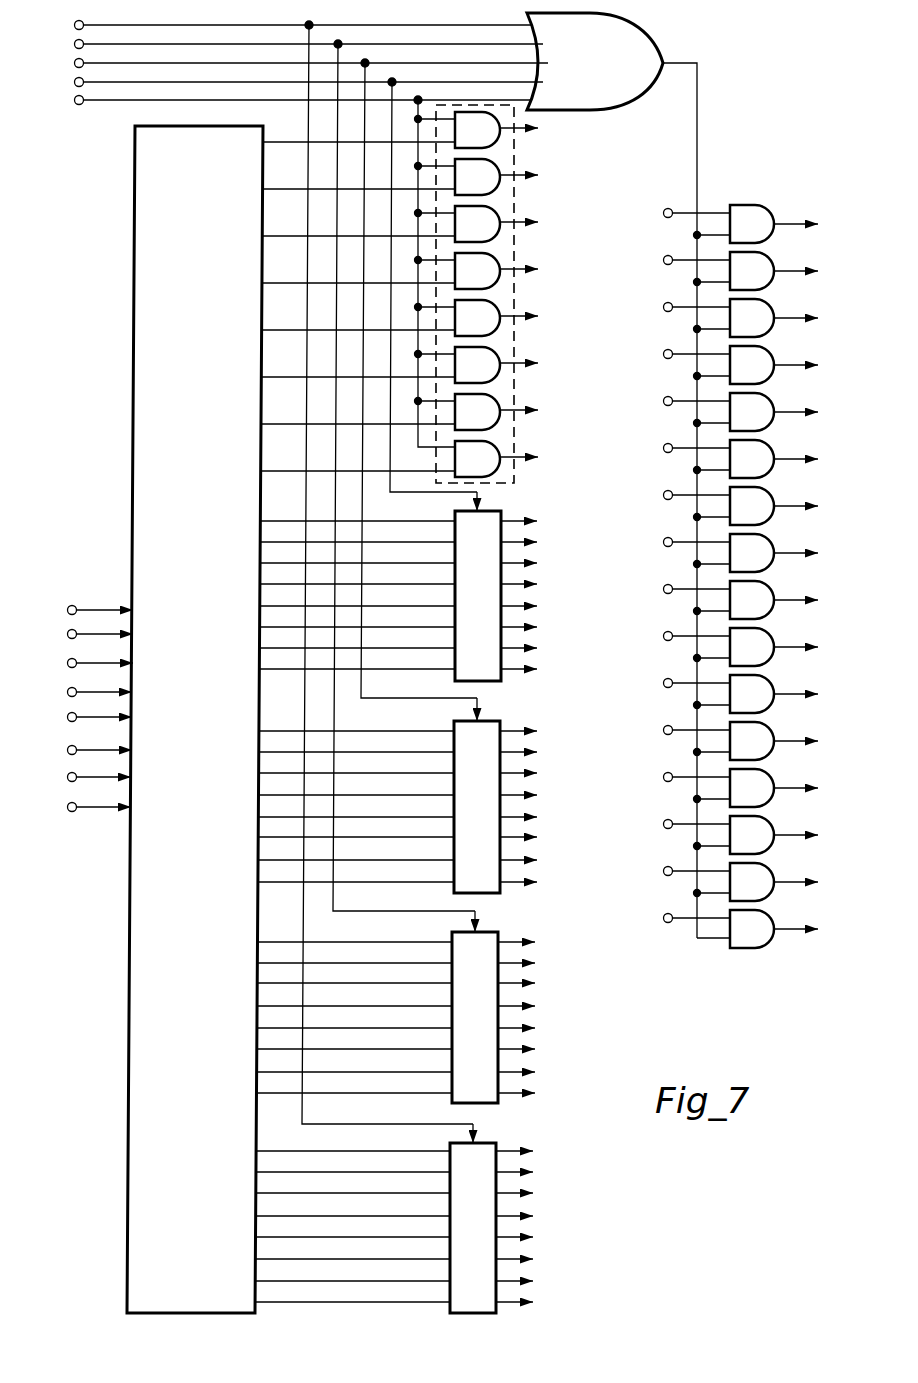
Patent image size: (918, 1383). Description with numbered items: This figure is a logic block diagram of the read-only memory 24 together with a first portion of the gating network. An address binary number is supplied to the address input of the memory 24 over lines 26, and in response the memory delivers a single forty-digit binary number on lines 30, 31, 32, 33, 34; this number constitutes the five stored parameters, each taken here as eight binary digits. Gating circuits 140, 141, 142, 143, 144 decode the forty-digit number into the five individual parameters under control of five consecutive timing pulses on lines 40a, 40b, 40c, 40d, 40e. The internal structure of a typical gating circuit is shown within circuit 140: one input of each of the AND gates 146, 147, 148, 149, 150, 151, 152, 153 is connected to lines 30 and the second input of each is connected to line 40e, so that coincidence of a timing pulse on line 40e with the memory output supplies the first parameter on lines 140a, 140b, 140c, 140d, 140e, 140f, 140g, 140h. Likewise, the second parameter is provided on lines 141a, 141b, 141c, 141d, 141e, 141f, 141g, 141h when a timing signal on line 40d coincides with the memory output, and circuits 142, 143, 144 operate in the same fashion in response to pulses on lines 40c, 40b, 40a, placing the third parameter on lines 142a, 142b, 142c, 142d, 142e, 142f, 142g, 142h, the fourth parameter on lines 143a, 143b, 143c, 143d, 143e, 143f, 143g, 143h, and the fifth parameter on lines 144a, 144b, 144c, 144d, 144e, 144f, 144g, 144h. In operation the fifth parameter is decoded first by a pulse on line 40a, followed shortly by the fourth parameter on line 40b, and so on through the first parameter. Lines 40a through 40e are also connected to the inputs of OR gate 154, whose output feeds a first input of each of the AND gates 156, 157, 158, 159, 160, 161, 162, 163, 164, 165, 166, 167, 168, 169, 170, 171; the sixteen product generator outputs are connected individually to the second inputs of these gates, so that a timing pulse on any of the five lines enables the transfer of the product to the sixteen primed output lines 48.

The read-only memory 24 is at (201, 759).
The lines 26 is at (66, 590).
The lines 30 is at (253, 140).
The lines 31 is at (252, 520).
The lines 32 is at (251, 728).
The lines 33 is at (250, 939).
The lines 34 is at (249, 1150).
The line 40a is at (76, 20).
The line 40b is at (76, 40).
The line 40c is at (74, 60).
The line 40d is at (76, 79).
The line 40e is at (76, 96).
The lines 48 is at (862, 190).
The gating circuit 140 is at (516, 163).
The line 140a is at (544, 128).
The line 140b is at (545, 175).
The line 140c is at (544, 222).
The line 140d is at (545, 269).
The line 140e is at (544, 316).
The line 140f is at (543, 363).
The line 140g is at (545, 410).
The line 140h is at (545, 457).
The gating circuit 141 is at (486, 607).
The gating circuit 142 is at (484, 817).
The gating circuit 143 is at (482, 1028).
The gating circuit 144 is at (481, 1237).
The line 141a is at (543, 521).
The line 141b is at (544, 542).
The line 141c is at (543, 563).
The line 141d is at (544, 584).
The line 141e is at (543, 606).
The line 141f is at (542, 627).
The line 141g is at (544, 648).
The line 141h is at (544, 669).
The line 142a is at (543, 731).
The line 142b is at (543, 752).
The line 142c is at (542, 773).
The line 142d is at (543, 795).
The line 142e is at (543, 817).
The line 142f is at (542, 837).
The line 142g is at (543, 860).
The line 142h is at (543, 882).
The line 143a is at (541, 942).
The line 143b is at (541, 963).
The line 143c is at (540, 983).
The line 143d is at (541, 1006).
The line 143e is at (541, 1028).
The line 143f is at (540, 1049).
The line 143g is at (541, 1072).
The line 143h is at (541, 1093).
The line 144a is at (539, 1151).
The line 144b is at (539, 1172).
The line 144c is at (538, 1193).
The line 144d is at (539, 1216).
The line 144e is at (539, 1237).
The line 144f is at (538, 1259).
The line 144g is at (539, 1281).
The line 144h is at (539, 1302).
The AND gate 146 is at (481, 140).
The AND gate 147 is at (481, 187).
The AND gate 148 is at (481, 234).
The AND gate 149 is at (481, 281).
The AND gate 150 is at (481, 328).
The AND gate 151 is at (481, 375).
The AND gate 152 is at (481, 422).
The AND gate 153 is at (481, 469).
The OR gate 154 is at (608, 71).
The AND gate 156 is at (755, 234).
The AND gate 157 is at (755, 281).
The AND gate 158 is at (755, 328).
The AND gate 159 is at (755, 375).
The AND gate 160 is at (755, 422).
The AND gate 161 is at (755, 469).
The AND gate 162 is at (755, 516).
The AND gate 163 is at (755, 563).
The AND gate 164 is at (755, 610).
The AND gate 165 is at (755, 657).
The AND gate 166 is at (755, 704).
The AND gate 167 is at (755, 751).
The AND gate 168 is at (755, 798).
The AND gate 169 is at (755, 845).
The AND gate 170 is at (755, 892).
The AND gate 171 is at (755, 939).